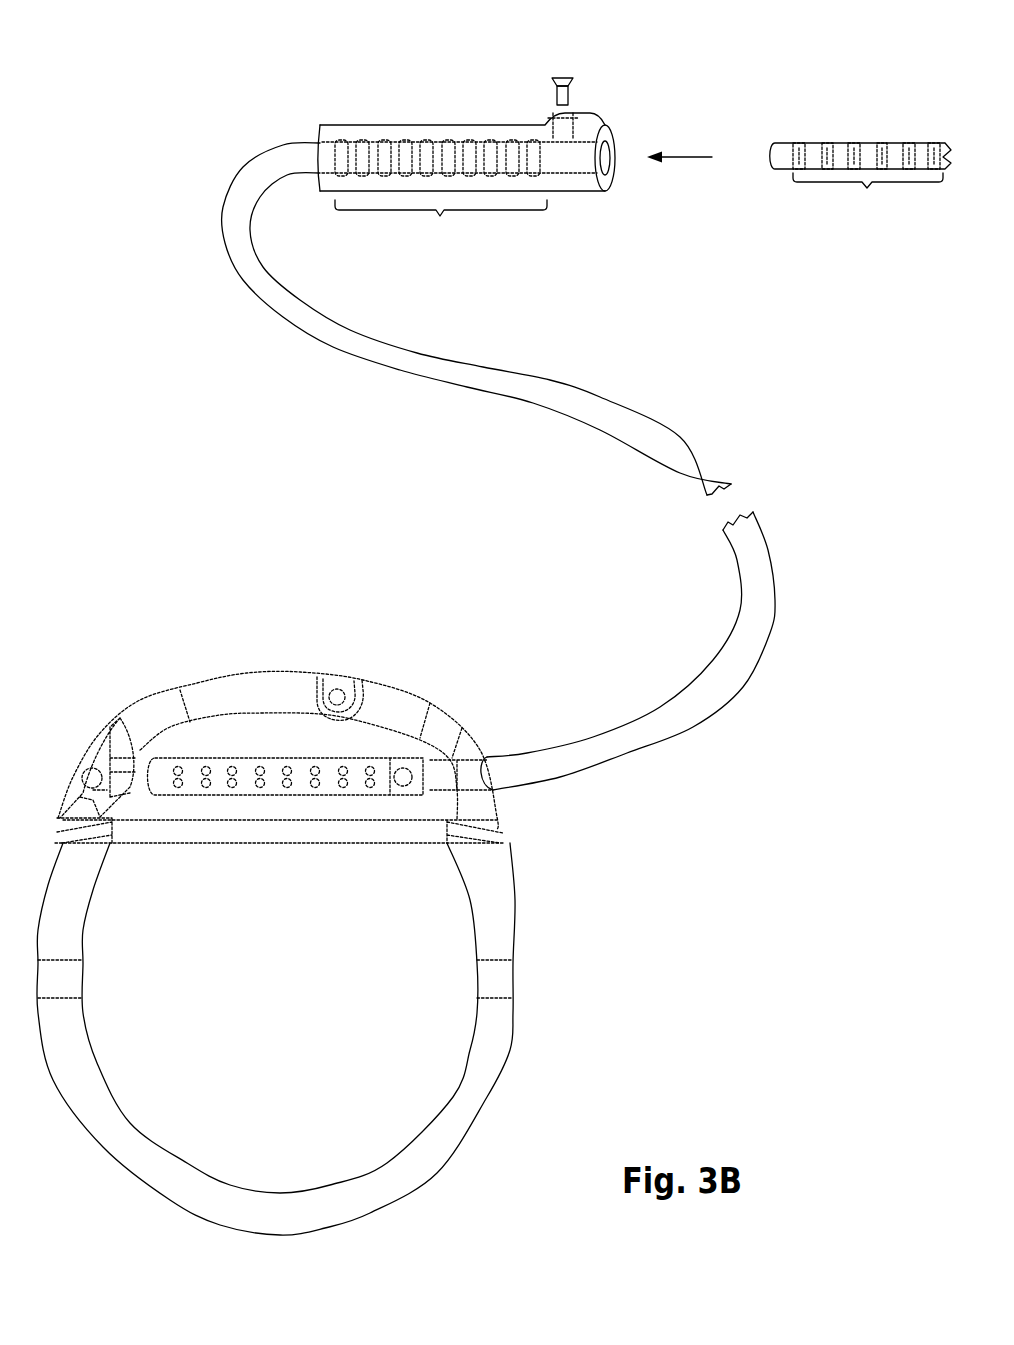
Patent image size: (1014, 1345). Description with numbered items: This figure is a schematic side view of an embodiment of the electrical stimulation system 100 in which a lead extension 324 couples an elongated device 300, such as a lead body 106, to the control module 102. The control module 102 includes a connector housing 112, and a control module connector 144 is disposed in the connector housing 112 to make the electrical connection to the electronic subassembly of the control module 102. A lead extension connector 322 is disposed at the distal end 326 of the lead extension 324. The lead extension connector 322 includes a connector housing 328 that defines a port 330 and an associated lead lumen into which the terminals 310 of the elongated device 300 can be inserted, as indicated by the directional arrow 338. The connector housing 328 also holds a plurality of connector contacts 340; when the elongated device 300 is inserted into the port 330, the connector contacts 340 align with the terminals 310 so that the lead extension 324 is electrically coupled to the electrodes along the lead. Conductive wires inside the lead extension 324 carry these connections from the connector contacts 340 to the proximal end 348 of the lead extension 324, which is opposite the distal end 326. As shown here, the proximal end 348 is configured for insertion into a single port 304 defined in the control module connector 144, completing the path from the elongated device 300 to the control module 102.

The electrical stimulation system 100 is at (728, 376).
The control module 102 is at (586, 990).
The lead body 106 is at (865, 143).
The connector housing 112 is at (385, 700).
The control module connector 144 is at (228, 756).
The elongated device 300 is at (828, 112).
The port 304 is at (527, 808).
The terminals 310 is at (868, 195).
The lead extension connector 322 is at (421, 125).
The lead extension 324 is at (593, 393).
The distal end 326 is at (308, 108).
The connector housing 328 is at (373, 135).
The port 330 is at (630, 185).
The directional arrow 338 is at (689, 153).
The connector contacts 340 is at (441, 225).
The proximal end 348 is at (508, 728).